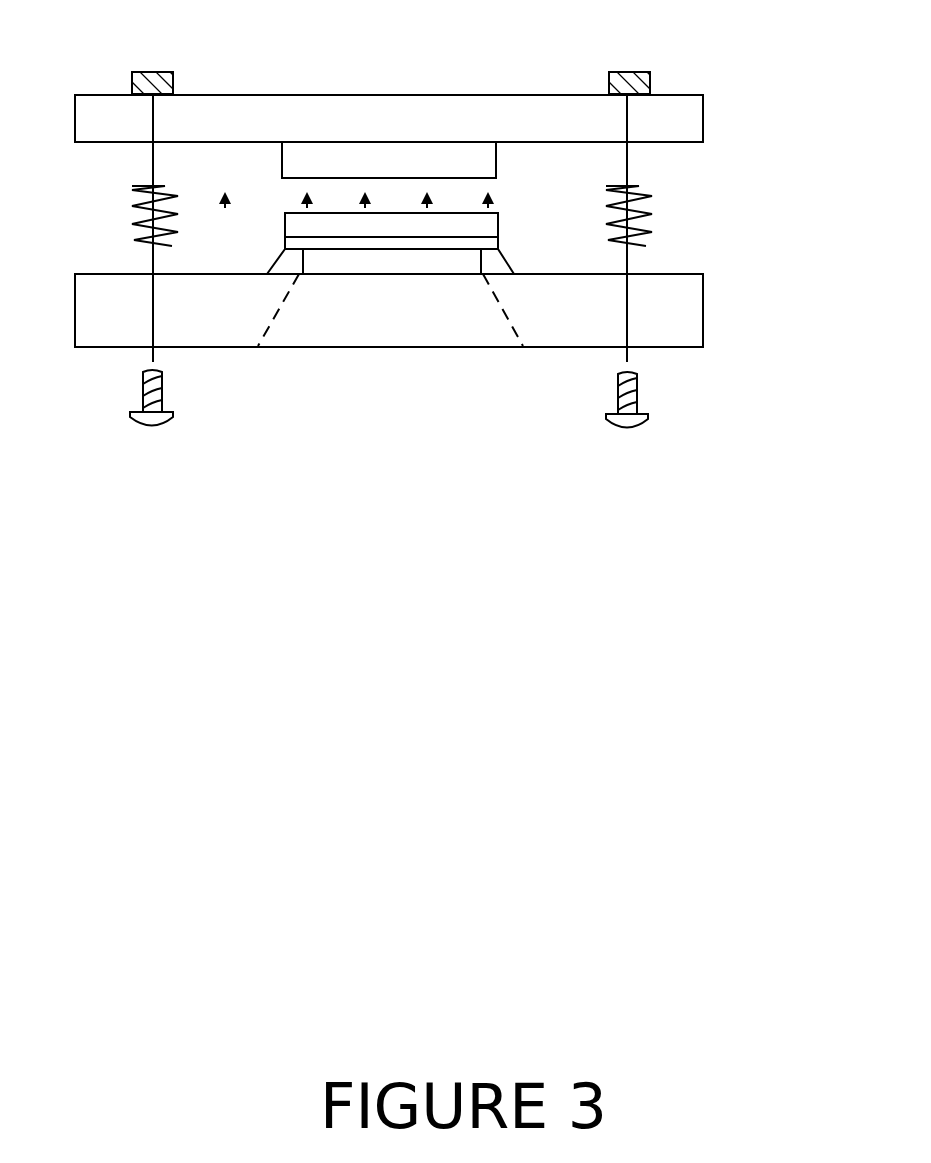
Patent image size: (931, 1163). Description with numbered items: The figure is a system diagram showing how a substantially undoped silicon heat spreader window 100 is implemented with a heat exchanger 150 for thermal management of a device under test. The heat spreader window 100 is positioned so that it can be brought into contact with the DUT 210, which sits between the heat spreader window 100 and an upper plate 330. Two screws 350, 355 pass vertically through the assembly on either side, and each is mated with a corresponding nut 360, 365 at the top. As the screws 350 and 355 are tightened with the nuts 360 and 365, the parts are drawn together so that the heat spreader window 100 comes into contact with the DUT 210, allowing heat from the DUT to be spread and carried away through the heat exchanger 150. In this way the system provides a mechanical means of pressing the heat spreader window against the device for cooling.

The substantially undoped silicon heat spreader window 100 is at (498, 213).
The heat exchanger 150 is at (703, 318).
The DUT 210 is at (418, 160).
The top plate 330 is at (703, 122).
The screw 350 is at (150, 428).
The screw 355 is at (625, 432).
The nut 360 is at (142, 72).
The nut 365 is at (627, 72).